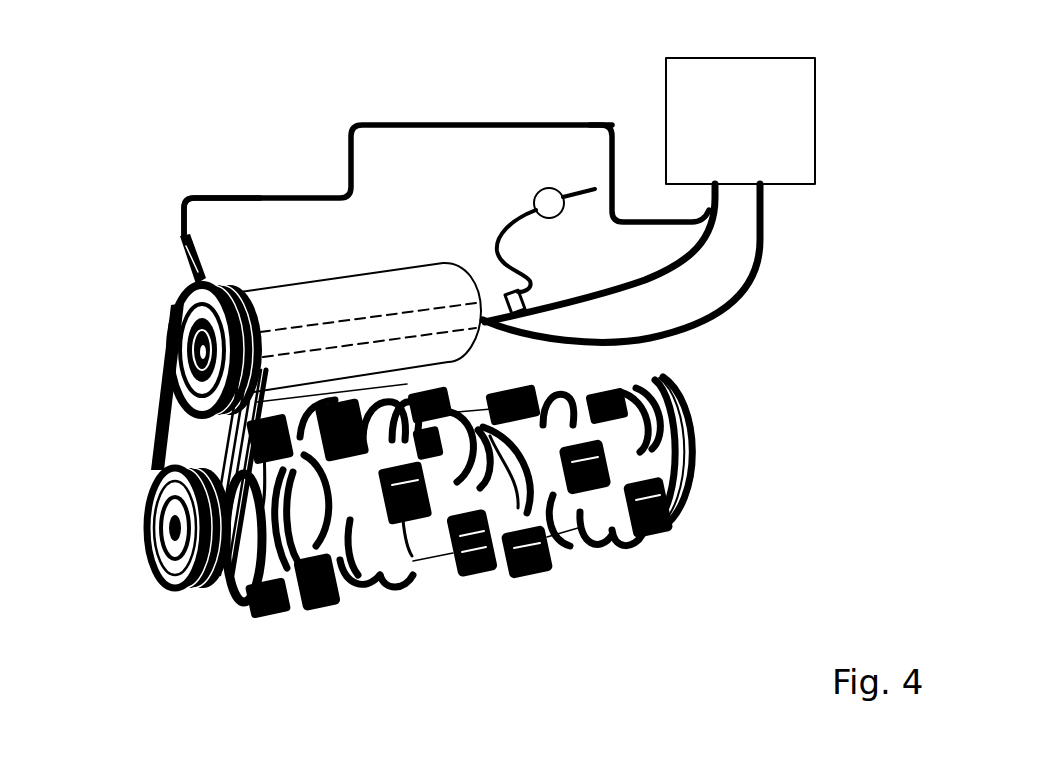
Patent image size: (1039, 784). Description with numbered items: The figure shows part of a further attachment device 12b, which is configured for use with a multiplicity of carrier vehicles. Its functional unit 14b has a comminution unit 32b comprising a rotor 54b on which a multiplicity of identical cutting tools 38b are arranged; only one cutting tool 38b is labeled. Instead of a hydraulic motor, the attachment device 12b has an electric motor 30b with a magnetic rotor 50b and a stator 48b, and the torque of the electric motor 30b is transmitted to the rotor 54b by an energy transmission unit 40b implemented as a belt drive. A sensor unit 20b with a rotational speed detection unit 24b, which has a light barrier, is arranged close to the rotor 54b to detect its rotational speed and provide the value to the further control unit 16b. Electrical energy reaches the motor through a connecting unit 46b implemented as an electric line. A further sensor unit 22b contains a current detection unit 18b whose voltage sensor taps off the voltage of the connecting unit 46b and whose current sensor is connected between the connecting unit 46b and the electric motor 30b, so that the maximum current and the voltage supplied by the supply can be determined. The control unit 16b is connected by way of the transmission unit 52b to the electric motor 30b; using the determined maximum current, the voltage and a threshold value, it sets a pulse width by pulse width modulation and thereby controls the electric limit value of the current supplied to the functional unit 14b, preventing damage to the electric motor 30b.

The further attachment device 12b is at (521, 535).
The functional unit 14b is at (520, 535).
The further control unit 16b is at (803, 130).
The current detection unit 18b is at (518, 290).
The sensor unit 20b is at (141, 207).
The further sensor unit 22b is at (541, 322).
The rotational speed detection unit 24b is at (188, 250).
The electric motor 30b is at (321, 203).
The comminution unit 32b is at (540, 577).
The cutting tool 38b is at (485, 585).
The energy transmission unit 40b is at (163, 415).
The connecting unit 46b is at (521, 166).
The stator 48b is at (402, 263).
The magnetic rotor 50b is at (329, 320).
The transmission unit 52b is at (584, 123).
The rotor 54b is at (680, 420).